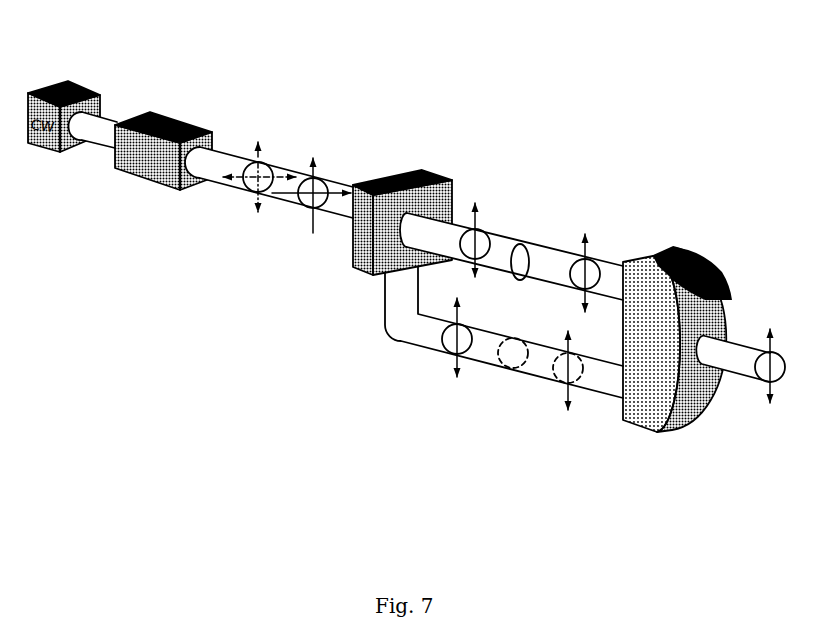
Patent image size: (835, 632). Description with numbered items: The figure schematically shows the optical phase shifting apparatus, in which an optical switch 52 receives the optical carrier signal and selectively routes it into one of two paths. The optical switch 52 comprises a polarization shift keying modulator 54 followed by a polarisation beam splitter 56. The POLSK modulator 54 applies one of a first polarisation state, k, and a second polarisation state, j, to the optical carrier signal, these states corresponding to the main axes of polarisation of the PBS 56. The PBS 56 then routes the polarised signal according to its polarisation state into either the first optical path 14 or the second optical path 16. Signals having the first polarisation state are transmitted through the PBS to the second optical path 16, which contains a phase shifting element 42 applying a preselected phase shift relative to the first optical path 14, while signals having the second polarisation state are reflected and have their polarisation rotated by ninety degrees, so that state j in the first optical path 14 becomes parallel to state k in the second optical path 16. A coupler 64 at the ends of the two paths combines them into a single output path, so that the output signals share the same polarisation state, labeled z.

The optical switch 52 is at (295, 112).
The polarization shift keying modulator 54 is at (157, 165).
The polarisation beam splitter 56 is at (437, 182).
The second optical path 16 is at (610, 200).
The pi/4 polarization rotator 42 is at (540, 252).
The first optical path 14 is at (487, 395).
The coupler 64 is at (697, 288).